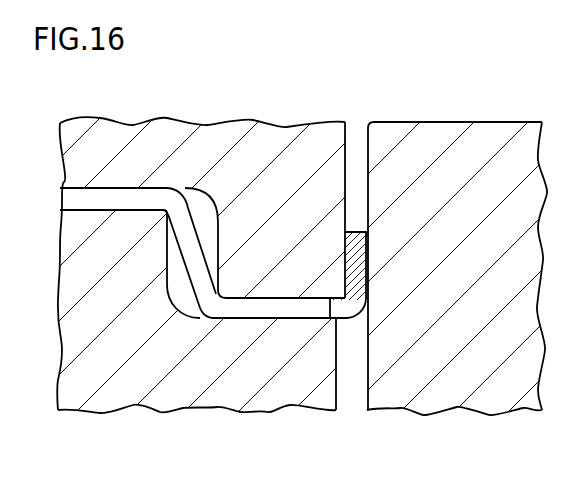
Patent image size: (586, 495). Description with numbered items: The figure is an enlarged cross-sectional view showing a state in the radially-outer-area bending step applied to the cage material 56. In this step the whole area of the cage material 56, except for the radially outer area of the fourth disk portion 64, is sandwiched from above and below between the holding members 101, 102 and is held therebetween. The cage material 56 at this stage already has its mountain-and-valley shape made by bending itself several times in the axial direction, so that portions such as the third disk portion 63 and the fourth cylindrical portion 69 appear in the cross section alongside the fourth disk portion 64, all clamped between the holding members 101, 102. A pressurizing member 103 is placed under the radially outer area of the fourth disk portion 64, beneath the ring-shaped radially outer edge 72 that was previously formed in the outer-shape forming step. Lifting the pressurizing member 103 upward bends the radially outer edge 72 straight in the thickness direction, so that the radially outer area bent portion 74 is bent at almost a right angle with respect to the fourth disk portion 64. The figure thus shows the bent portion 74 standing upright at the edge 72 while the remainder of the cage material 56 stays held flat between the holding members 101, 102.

The cage material 56 is at (276, 278).
The third disk portion 63 is at (103, 200).
The fourth disk portion 64 is at (274, 308).
The fourth cylindrical portion 69 is at (192, 250).
The edge 72 is at (355, 230).
The radially outer area bent portion 74 is at (358, 258).
The holding member 101 is at (150, 140).
The holding member 102 is at (197, 383).
The pressurizing member 103 is at (467, 383).